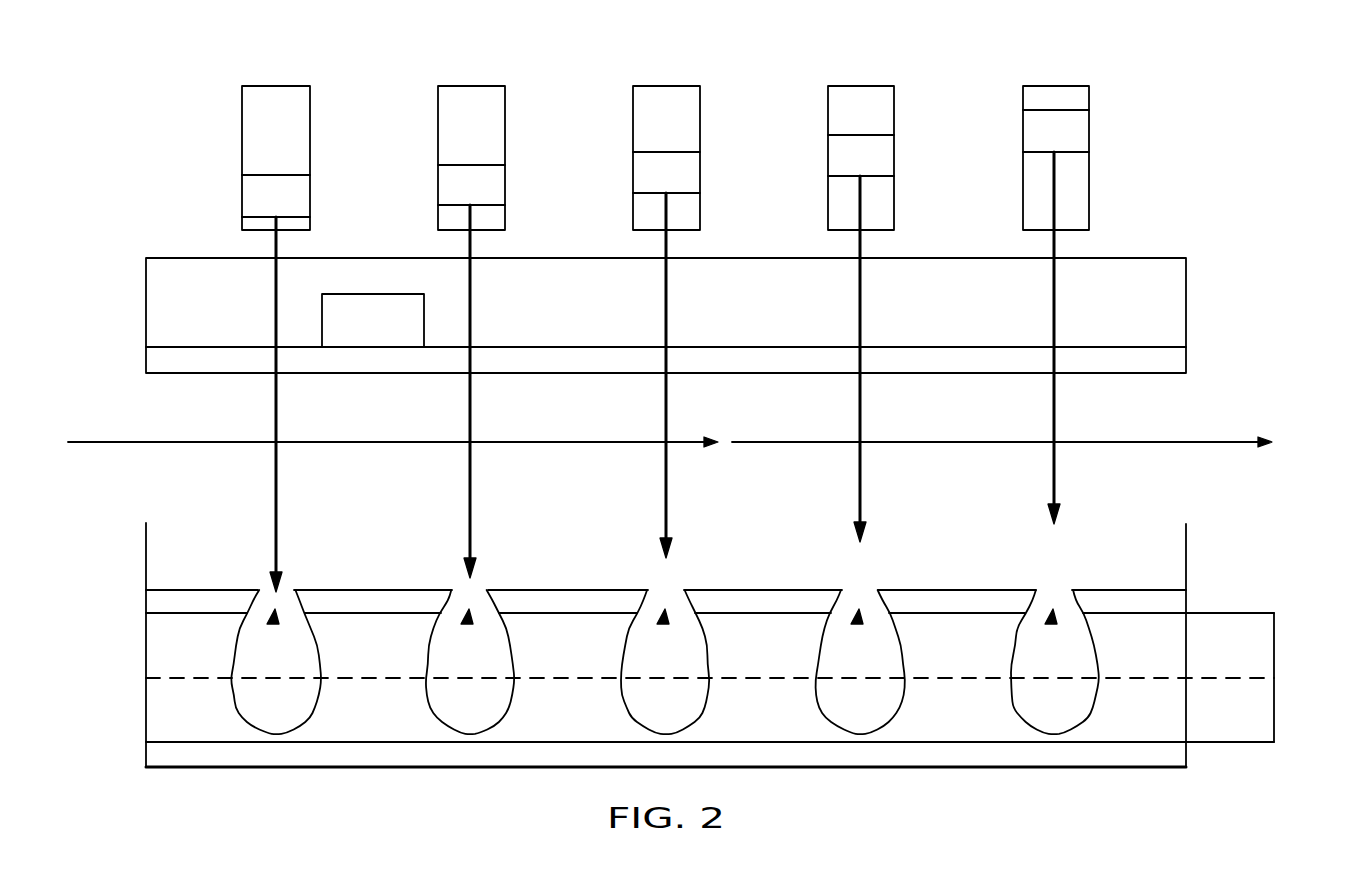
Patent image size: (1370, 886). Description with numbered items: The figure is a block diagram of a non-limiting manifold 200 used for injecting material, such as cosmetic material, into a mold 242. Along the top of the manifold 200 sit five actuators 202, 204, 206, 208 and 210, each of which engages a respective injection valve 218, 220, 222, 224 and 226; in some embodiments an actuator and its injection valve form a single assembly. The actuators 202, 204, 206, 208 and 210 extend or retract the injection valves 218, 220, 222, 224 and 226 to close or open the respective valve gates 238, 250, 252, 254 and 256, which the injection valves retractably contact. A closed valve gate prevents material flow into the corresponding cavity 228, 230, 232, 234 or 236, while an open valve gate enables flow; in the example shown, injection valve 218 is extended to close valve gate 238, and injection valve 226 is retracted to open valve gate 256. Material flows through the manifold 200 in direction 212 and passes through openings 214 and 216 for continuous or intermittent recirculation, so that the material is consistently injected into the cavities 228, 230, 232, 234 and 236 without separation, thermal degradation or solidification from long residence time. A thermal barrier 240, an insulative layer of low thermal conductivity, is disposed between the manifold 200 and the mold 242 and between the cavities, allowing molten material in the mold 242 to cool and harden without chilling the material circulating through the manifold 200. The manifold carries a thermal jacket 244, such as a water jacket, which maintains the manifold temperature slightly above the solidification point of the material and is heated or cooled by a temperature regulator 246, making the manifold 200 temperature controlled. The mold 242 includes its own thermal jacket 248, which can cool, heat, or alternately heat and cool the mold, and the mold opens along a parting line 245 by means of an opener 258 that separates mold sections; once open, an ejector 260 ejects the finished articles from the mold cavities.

The manifold 200 is at (158, 172).
The actuator 202 is at (263, 86).
The actuator 204 is at (457, 86).
The actuator 206 is at (653, 86).
The actuator 208 is at (873, 86).
The actuator 210 is at (1067, 86).
The direction 212 is at (118, 440).
The opening 214 is at (114, 526).
The opening 216 is at (1217, 526).
The injection valve 218 is at (274, 420).
The injection valve 220 is at (468, 420).
The injection valve 222 is at (664, 420).
The injection valve 224 is at (862, 420).
The injection valve 226 is at (1056, 420).
The cavity 228 is at (272, 622).
The cavity 230 is at (466, 622).
The cavity 232 is at (662, 622).
The cavity 234 is at (856, 622).
The cavity 236 is at (1050, 622).
The valve gate 238 is at (230, 590).
The thermal barrier 240 is at (150, 600).
The mold 242 is at (150, 716).
The thermal jacket 244 is at (150, 355).
The parting line 245 is at (742, 680).
The temperature regulator 246 is at (395, 337).
The thermal jacket 248 is at (150, 755).
The valve gate 250 is at (425, 590).
The valve gate 252 is at (620, 590).
The valve gate 254 is at (818, 590).
The valve gate 256 is at (1100, 590).
The opener 258 is at (1268, 653).
The ejector 260 is at (1268, 710).